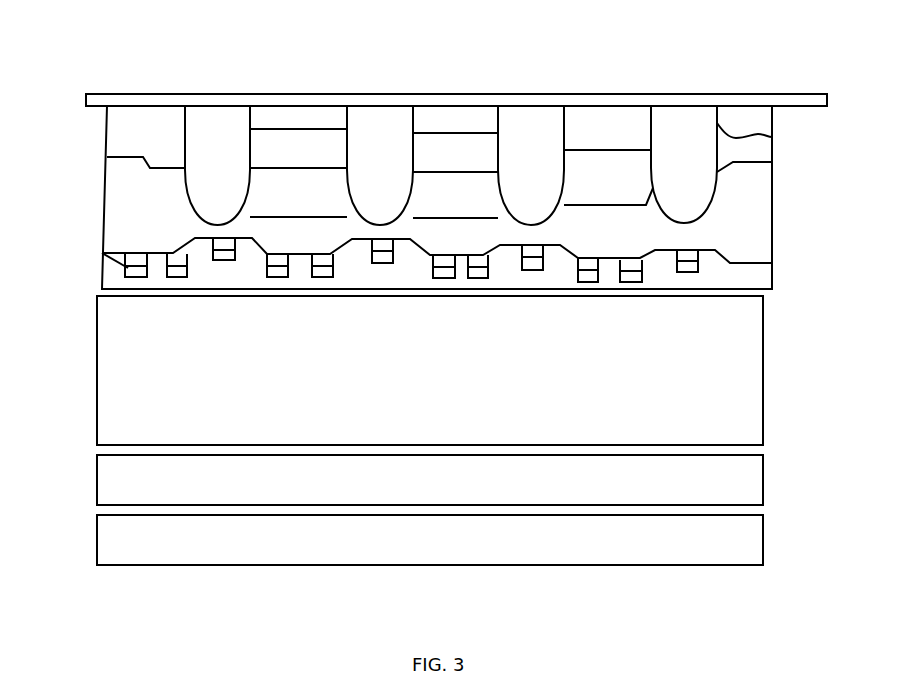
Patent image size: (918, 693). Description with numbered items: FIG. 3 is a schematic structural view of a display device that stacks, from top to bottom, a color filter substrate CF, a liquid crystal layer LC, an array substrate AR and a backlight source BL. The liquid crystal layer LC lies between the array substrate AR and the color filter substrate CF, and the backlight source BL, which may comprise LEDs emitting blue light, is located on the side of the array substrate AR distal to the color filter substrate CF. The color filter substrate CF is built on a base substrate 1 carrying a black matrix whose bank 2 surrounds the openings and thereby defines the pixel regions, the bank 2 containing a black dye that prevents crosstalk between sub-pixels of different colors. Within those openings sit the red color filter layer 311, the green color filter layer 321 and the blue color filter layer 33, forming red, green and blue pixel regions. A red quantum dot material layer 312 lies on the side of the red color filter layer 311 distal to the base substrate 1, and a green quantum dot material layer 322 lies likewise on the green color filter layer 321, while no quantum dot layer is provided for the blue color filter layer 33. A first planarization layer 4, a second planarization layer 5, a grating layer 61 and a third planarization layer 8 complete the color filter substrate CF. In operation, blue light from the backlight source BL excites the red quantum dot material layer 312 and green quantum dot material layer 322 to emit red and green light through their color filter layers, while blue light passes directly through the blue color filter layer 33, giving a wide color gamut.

The base substrate 1 is at (807, 95).
The bank 2 is at (772, 137).
The red color filter layer 311 is at (273, 110).
The red quantum dot material layer 312 is at (328, 143).
The green color filter layer 321 is at (438, 120).
The green quantum dot material layer 322 is at (485, 142).
The blue color filter layer 33 is at (633, 123).
The first planarization layer 4 is at (133, 138).
The second planarization layer 5 is at (117, 225).
The grating layer 61 is at (100, 253).
The third planarization layer 8 is at (108, 280).
The color filter substrate CF is at (772, 222).
The liquid crystal layer LC is at (763, 368).
The array substrate AR is at (763, 478).
The backlight source BL is at (763, 538).